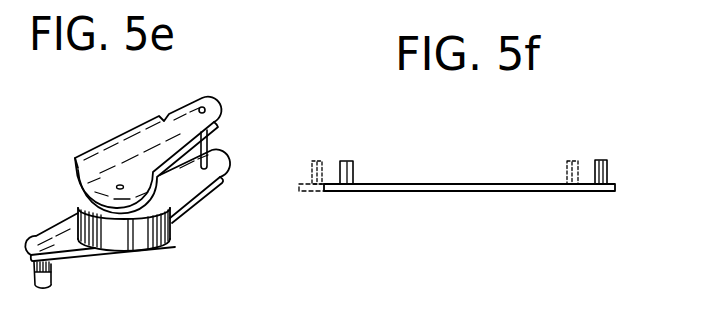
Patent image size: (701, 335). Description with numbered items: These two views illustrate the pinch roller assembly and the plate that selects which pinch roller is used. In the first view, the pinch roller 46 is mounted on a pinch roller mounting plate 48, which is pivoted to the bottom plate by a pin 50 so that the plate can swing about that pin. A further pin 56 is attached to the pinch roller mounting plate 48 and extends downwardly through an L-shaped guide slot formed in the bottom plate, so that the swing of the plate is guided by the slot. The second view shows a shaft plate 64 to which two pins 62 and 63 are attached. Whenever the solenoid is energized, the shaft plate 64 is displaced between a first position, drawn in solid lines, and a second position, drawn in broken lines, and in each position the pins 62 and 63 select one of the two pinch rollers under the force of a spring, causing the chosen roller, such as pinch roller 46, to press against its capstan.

In FIG. 5e, the pinch roller 46 is at (139, 238).
In FIG. 5e, the pinch roller mounting plate 48 is at (126, 154).
In FIG. 5e, the pin 50 is at (203, 106).
In FIG. 5e, the pin 56 is at (53, 284).
In FIG. 5f, the pin 62 is at (316, 158).
In FIG. 5f, the pin 63 is at (600, 159).
In FIG. 5f, the shaft plate 64 is at (475, 193).